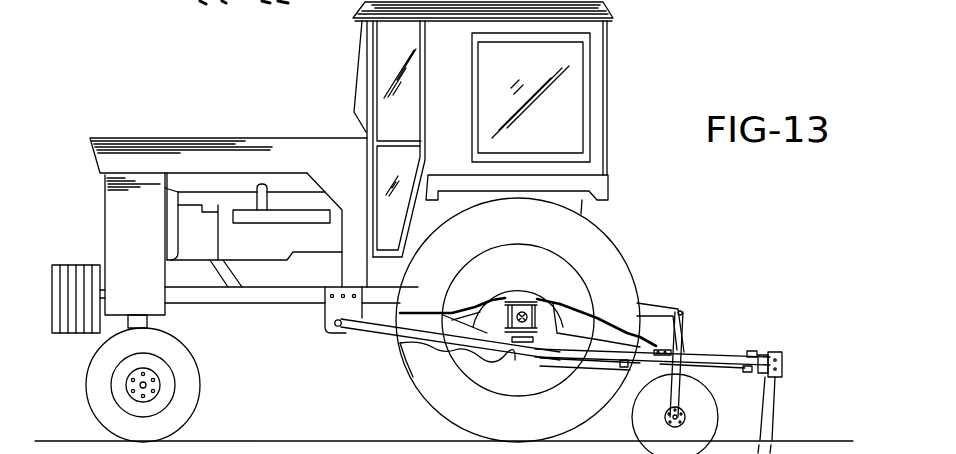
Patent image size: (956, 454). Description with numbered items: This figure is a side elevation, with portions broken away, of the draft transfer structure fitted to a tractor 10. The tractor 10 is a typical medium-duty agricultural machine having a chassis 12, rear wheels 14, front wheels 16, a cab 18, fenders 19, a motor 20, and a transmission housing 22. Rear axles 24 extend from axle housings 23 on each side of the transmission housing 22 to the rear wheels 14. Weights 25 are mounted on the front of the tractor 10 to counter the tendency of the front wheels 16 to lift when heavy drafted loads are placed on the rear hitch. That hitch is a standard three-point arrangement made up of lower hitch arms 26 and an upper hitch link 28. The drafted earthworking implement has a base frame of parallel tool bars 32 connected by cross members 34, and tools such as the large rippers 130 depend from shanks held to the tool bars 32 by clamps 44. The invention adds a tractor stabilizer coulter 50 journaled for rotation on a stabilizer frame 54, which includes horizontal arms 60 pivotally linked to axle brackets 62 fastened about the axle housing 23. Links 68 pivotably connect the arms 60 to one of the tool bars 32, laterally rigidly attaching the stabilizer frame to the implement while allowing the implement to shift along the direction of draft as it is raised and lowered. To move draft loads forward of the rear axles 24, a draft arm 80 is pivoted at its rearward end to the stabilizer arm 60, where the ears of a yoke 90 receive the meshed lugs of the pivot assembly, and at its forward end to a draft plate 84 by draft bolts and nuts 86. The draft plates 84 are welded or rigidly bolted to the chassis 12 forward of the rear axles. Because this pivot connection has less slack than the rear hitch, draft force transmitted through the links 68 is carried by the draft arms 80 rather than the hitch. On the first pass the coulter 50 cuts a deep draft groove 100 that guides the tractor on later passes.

The tractor 10 is at (215, 108).
The chassis 12 is at (233, 297).
The rear wheels 14 is at (428, 378).
The front wheels 16 is at (188, 385).
The cab 18 is at (571, 106).
The fenders 19 is at (604, 190).
The motor 20 is at (316, 216).
The transmission housing 22 is at (547, 322).
The axle housings 23 is at (503, 318).
The rear axles 24 is at (523, 310).
The weights 25 is at (79, 284).
The lower hitch arms 26 is at (597, 322).
The upper hitch link 28 is at (655, 307).
The tool bars 32 is at (748, 343).
The cross members 34 is at (713, 362).
The clamps 44 is at (788, 350).
The tractor stabilizer coulter 50 is at (637, 413).
The stabilizer frame 54 is at (584, 360).
The horizontal arms 60 is at (577, 355).
The axle brackets 62 is at (481, 302).
The links 68 is at (668, 350).
The draft arms 80 is at (385, 329).
The draft plates 84 is at (325, 318).
The draft bolts and nuts 86 is at (338, 328).
The yokes 90 is at (510, 346).
The draft grooves 100 is at (808, 442).
The rippers 130 is at (772, 424).